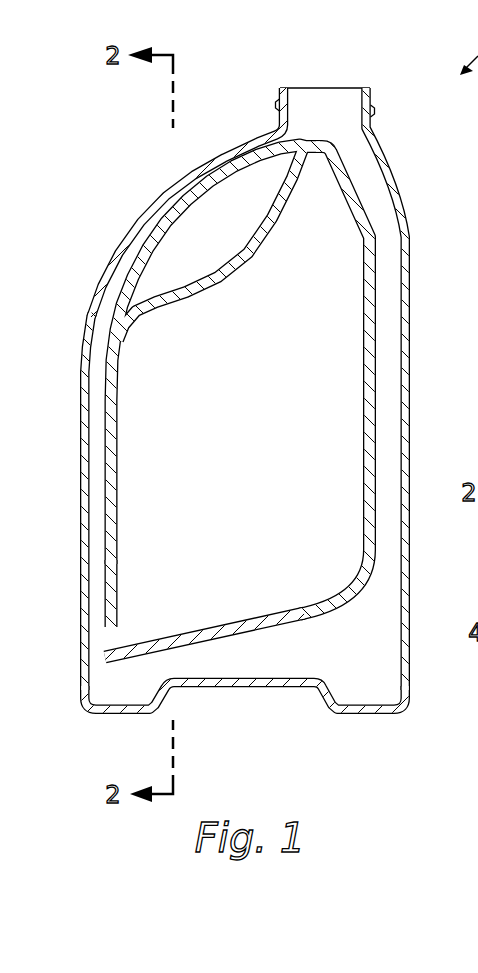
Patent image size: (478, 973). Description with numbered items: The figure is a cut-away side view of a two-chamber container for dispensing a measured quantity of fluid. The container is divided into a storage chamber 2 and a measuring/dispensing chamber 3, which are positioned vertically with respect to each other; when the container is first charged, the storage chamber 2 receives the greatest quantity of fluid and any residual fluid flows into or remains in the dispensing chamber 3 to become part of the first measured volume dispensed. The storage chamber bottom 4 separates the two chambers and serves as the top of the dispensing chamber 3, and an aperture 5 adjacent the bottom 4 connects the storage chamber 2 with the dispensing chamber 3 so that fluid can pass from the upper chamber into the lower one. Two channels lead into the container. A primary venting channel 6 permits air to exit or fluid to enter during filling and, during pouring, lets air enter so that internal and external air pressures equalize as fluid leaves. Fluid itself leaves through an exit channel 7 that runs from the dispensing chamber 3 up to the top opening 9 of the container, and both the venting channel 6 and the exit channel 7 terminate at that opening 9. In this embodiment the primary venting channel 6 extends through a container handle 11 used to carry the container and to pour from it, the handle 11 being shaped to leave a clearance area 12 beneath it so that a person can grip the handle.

The storage chamber 2 is at (290, 362).
The measuring/dispensing chamber 3 is at (302, 664).
The storage chamber bottom 4 is at (252, 615).
The aperture 5 is at (113, 637).
The primary venting channel 6 is at (293, 133).
The exit channel 7 is at (355, 145).
The top opening 9 is at (318, 100).
The container handle 11 is at (170, 186).
The clearance area 12 is at (180, 262).